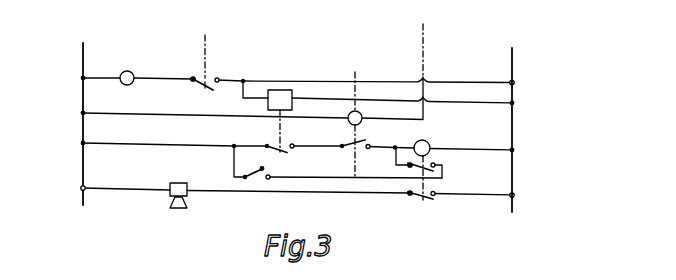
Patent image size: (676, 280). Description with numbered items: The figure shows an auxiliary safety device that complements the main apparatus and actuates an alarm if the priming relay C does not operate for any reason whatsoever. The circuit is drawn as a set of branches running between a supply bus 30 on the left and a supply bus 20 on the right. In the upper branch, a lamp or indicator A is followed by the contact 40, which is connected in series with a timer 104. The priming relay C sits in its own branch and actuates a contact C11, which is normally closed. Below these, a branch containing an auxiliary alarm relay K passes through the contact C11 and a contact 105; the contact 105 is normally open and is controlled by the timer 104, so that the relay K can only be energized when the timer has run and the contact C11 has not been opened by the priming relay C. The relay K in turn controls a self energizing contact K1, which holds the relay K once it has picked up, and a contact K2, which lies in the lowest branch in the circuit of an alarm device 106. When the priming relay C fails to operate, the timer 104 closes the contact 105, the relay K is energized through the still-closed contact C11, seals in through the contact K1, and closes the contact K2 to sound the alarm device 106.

The left supply bus 30 is at (82, 92).
The right supply bus 20 is at (512, 126).
The contact 40 is at (193, 83).
The timer 104 is at (280, 93).
The contact 105 is at (280, 152).
The alarm device 106 is at (177, 182).
The indicator lamp A is at (128, 80).
The priming relay C is at (362, 115).
The contact C11 is at (368, 142).
The auxiliary alarm relay K is at (430, 144).
The self energizing contact K1 is at (420, 167).
The contact K2 is at (422, 196).